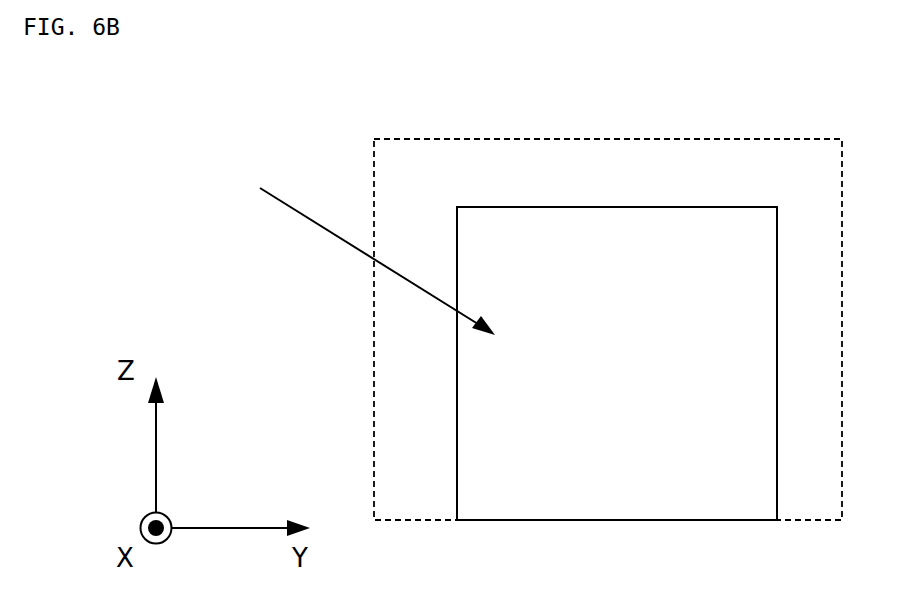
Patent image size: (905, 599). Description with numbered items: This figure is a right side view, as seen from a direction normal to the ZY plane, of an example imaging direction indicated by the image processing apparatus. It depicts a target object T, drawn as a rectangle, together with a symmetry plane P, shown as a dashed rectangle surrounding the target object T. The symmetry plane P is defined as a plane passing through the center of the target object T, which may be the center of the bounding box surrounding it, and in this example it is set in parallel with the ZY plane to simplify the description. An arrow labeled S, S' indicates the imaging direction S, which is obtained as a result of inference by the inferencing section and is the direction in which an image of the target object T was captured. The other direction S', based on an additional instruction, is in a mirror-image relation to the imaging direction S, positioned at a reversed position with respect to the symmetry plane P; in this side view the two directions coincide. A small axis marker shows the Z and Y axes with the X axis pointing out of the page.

The symmetry plane P is at (610, 311).
The target object T is at (544, 207).
The imaging direction S is at (363, 244).